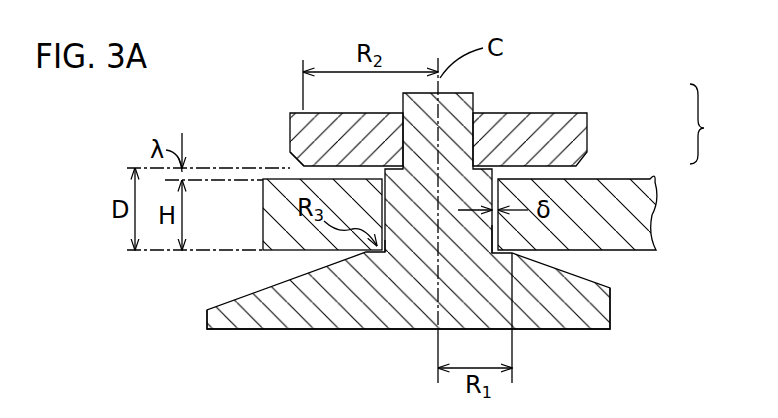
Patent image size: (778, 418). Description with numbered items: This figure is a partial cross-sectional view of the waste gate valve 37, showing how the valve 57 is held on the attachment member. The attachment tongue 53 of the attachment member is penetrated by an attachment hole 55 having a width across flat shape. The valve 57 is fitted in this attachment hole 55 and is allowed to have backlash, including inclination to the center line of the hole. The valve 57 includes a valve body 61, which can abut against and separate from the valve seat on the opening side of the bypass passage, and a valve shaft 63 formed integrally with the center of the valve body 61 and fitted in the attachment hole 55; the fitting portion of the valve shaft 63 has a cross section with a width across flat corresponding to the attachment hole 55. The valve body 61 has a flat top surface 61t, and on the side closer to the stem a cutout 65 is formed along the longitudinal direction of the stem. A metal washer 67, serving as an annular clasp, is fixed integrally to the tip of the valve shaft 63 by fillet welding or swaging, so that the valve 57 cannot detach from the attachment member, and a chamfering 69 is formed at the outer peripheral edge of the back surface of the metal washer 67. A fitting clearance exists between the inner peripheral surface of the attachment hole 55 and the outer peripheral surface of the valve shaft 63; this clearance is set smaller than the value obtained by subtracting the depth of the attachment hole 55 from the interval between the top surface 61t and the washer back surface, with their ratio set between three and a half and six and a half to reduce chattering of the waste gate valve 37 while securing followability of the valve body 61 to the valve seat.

The waste gate valve 37 is at (550, 77).
The attachment tongue 53 is at (627, 243).
The attachment hole 55 is at (492, 236).
The valve 57 is at (714, 124).
The valve body 61 is at (563, 267).
The top surface 61t is at (373, 243).
The valve shaft 63 is at (495, 190).
The cutout 65 is at (612, 302).
The metal washer 67 is at (300, 113).
The chamfering 69 is at (291, 165).